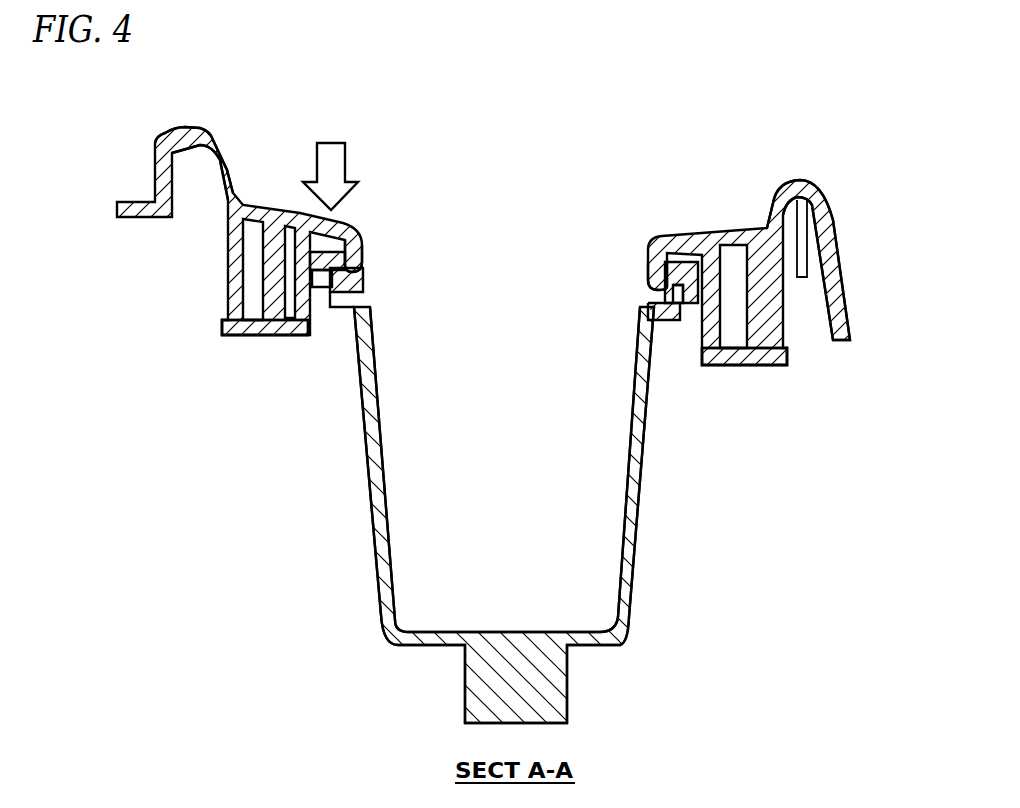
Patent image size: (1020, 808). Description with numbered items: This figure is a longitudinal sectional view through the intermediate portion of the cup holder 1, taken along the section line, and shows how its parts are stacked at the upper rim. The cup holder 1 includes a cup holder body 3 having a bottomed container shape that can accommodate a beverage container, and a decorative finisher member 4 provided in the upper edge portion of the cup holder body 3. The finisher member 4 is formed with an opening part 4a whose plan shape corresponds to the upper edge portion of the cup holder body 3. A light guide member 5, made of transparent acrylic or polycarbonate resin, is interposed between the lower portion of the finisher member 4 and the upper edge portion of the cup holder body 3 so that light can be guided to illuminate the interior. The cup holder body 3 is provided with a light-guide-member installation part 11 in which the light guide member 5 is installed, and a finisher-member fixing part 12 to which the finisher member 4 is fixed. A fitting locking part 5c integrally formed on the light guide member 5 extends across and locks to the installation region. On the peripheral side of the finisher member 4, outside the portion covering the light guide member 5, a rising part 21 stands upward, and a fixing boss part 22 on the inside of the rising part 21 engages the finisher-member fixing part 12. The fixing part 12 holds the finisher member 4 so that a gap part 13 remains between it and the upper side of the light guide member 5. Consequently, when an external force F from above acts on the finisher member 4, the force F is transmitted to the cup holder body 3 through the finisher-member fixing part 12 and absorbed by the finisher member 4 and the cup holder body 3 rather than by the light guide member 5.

The cup holder 1 is at (424, 389).
The cup holder body 3 is at (378, 612).
The finisher member 4 is at (152, 165).
The opening part 4a is at (358, 270).
The light guide member 5 is at (360, 282).
The fitting locking part 5c is at (300, 250).
The light-guide-member installation part 11 is at (320, 328).
The finisher-member fixing part 12 is at (252, 340).
The gap part 13 is at (352, 265).
The rising part 21 is at (236, 170).
The fixing boss part 22 is at (228, 318).
The external force F is at (345, 160).